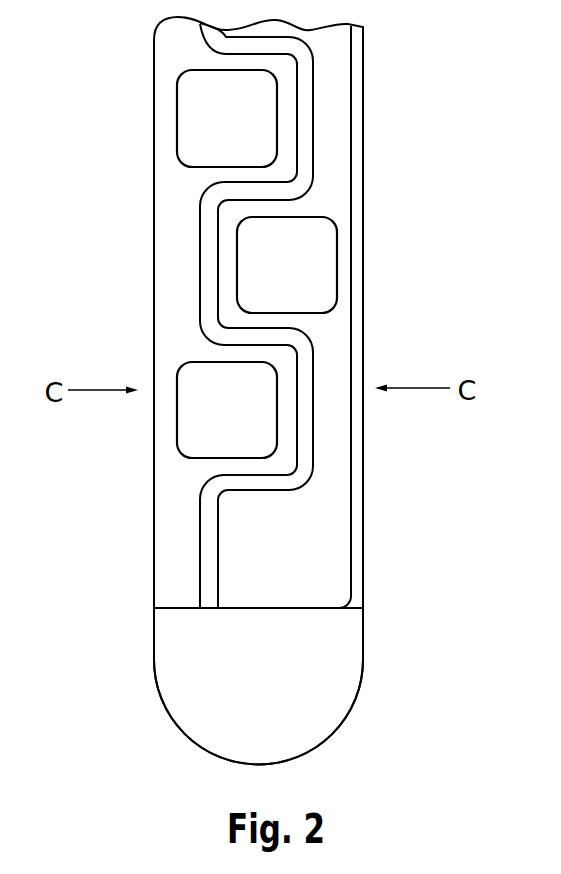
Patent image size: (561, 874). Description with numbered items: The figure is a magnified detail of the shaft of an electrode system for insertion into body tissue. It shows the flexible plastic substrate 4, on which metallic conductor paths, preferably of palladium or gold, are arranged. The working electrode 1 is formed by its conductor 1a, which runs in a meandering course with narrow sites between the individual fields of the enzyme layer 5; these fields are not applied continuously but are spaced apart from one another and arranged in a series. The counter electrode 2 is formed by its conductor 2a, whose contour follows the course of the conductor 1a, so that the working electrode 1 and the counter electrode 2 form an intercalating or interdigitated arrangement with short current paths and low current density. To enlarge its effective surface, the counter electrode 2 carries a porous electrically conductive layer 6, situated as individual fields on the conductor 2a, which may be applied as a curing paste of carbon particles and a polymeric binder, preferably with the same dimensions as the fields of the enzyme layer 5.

The working electrode 1 is at (168, 95).
The conductor of the working electrode 1a is at (187, 269).
The counter electrode 2 is at (347, 239).
The conductor of the counter electrode 2a is at (333, 138).
The substrate 4 is at (203, 688).
The enzyme layer 5 is at (200, 131).
The porous electrically conductive layer 6 is at (310, 262).